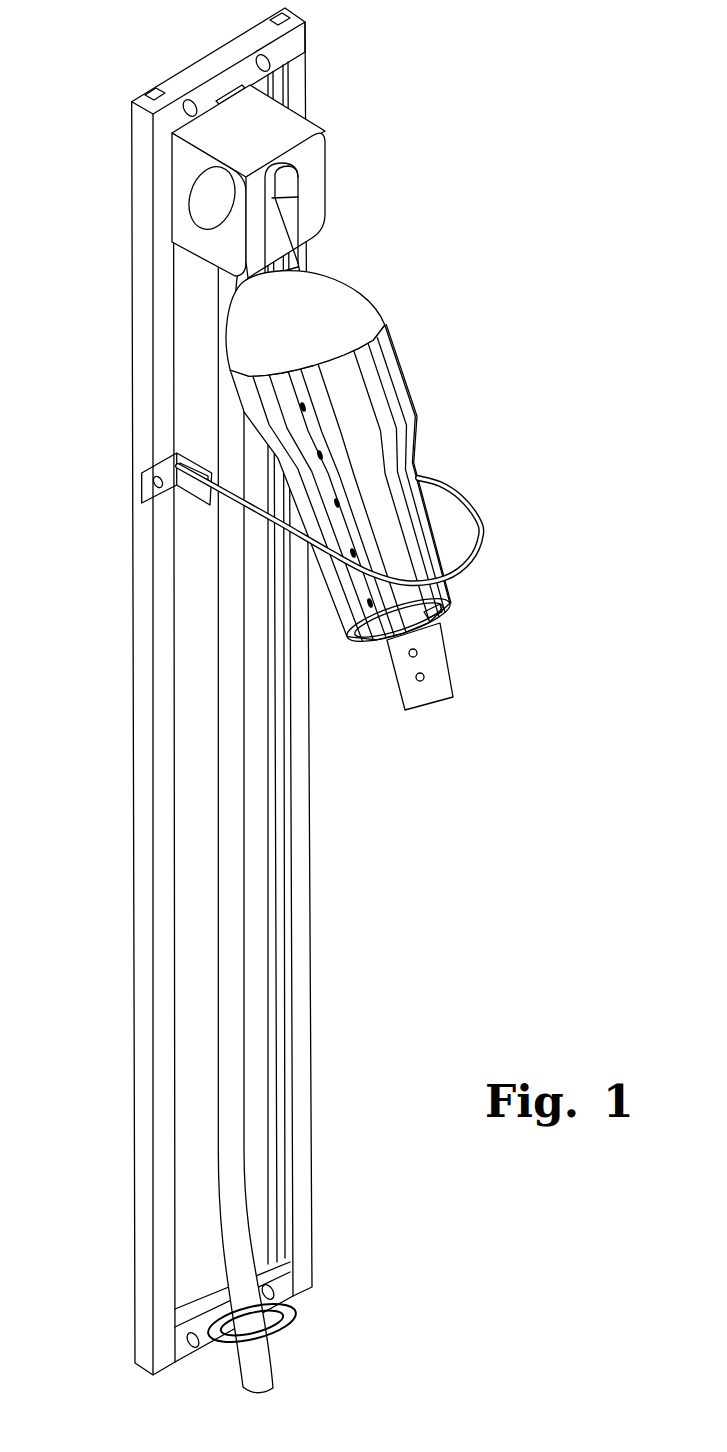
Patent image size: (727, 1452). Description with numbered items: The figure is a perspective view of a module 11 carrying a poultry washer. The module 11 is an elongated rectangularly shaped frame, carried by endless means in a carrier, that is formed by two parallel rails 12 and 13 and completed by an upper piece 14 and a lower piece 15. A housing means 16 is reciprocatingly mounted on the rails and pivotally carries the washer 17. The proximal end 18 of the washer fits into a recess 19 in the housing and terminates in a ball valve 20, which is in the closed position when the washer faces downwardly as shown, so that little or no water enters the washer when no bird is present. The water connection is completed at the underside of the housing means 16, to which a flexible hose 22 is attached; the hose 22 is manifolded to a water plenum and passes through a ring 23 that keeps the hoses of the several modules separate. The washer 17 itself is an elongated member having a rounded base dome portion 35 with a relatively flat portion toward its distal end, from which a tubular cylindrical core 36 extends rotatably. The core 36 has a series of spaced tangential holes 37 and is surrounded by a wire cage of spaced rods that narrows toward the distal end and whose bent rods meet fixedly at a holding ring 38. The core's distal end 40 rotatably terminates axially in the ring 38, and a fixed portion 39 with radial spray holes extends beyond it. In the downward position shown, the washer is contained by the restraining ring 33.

The module 11 is at (322, 700).
The rail 12 is at (133, 720).
The rail 13 is at (303, 765).
The upper piece 14 is at (228, 50).
The lower piece 15 is at (285, 1283).
The housing means 16 is at (312, 190).
The washer 17 is at (411, 488).
The proximal end 18 is at (290, 252).
The recess 19 is at (293, 202).
The ball valve 20 is at (280, 182).
The flexible hose 22 is at (228, 970).
The ring 23 is at (293, 1327).
The ring 33 is at (477, 518).
The rounded base dome portion 35 is at (363, 308).
The tubular cylindrical core 36 is at (365, 425).
The tangential holes 37 is at (377, 620).
The holding ring 38 is at (437, 630).
The fixed portion 39 is at (448, 693).
The distal end 40 is at (443, 602).